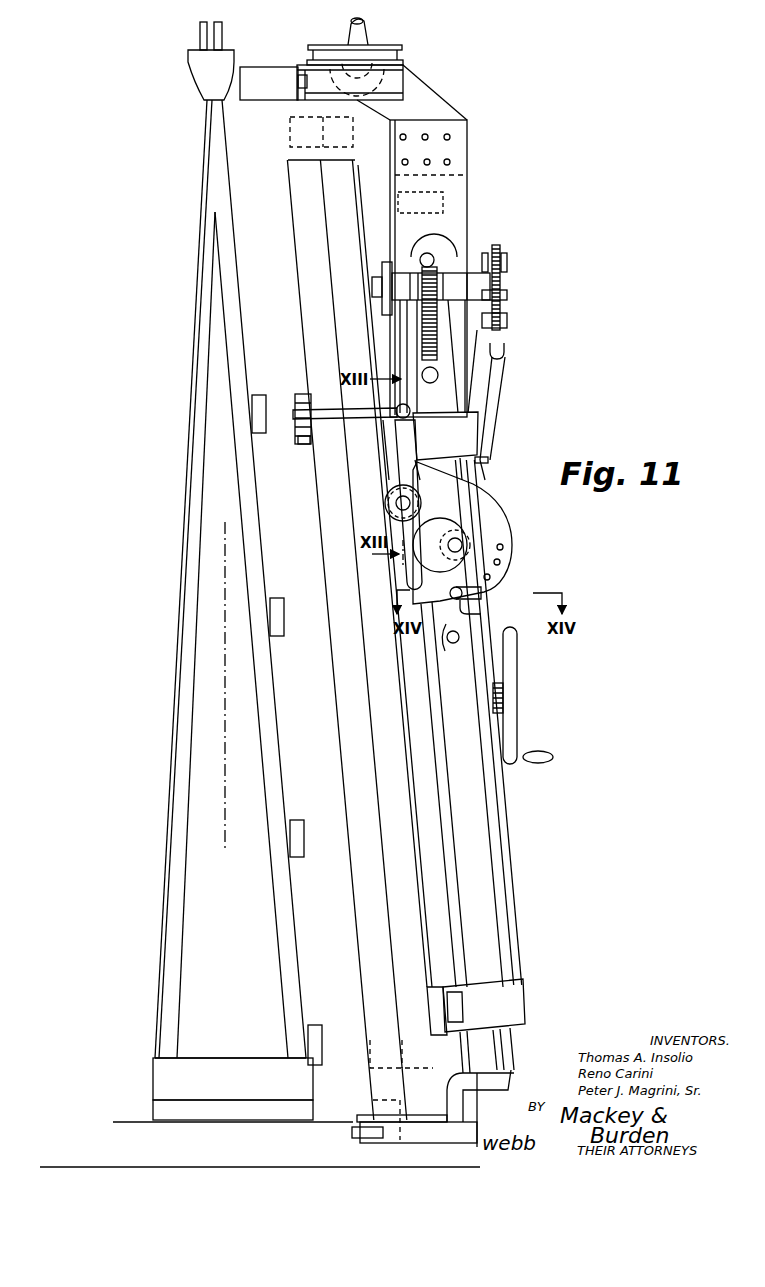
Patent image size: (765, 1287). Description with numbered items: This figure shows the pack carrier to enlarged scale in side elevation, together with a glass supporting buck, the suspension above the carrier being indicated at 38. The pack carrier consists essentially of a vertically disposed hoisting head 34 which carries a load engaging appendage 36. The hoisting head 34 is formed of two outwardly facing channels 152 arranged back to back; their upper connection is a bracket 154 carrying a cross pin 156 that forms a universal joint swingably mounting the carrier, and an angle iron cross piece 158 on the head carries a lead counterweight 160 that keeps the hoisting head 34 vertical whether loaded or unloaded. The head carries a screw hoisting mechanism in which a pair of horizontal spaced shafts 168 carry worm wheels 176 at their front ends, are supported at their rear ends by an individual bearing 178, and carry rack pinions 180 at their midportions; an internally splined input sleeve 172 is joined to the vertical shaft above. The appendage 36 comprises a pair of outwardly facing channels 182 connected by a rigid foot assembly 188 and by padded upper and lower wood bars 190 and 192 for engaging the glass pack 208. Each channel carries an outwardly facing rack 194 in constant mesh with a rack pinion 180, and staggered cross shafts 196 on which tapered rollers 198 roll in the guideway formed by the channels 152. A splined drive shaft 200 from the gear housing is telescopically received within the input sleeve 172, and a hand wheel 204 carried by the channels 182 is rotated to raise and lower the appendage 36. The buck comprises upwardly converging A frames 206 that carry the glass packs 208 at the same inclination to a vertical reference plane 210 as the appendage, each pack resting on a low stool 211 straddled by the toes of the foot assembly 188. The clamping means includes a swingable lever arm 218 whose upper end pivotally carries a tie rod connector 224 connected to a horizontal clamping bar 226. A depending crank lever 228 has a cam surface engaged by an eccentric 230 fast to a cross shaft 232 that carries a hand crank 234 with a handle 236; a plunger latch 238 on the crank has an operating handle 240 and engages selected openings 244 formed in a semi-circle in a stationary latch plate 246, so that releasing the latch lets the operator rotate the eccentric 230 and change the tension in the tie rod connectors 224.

The hoisting head 34 is at (468, 184).
The load engaging appendage 36 is at (548, 854).
The pulley shaft 38 is at (366, 28).
The outwardly facing channels 152 is at (468, 140).
The bracket 154 is at (410, 82).
The cross pin 156 is at (348, 62).
The angle iron cross piece 158 is at (304, 70).
The lead counterweight 160 is at (272, 96).
The horizontal spaced shafts 168 is at (505, 294).
The input sleeve 172 is at (500, 404).
The worm wheels 176 is at (507, 276).
The bearing 178 is at (382, 256).
The rack pinions 180 is at (448, 280).
The outwardly facing channels 182 is at (490, 804).
The foot assembly 188 is at (465, 1113).
The upper wood bar 190 is at (387, 424).
The lower wood bar 192 is at (432, 1008).
The rack 194 is at (422, 335).
The cross shafts 196 is at (421, 258).
The tapered rollers 198 is at (424, 228).
The drive shaft 200 is at (487, 473).
The hand wheel 204 is at (519, 727).
The A frames 206 is at (186, 658).
The glass pack 208 is at (382, 777).
The vertical reference plane 210 is at (228, 716).
The stool 211 is at (360, 1151).
The lever arm 218 is at (399, 468).
The tie rod connector 224 is at (318, 407).
The clamping bar 226 is at (300, 437).
The crank lever 228 is at (405, 530).
The eccentric 230 is at (499, 505).
The cross shaft 232 is at (463, 545).
The hand crank 234 is at (458, 647).
The handle 236 is at (460, 637).
The plunger latch 238 is at (482, 607).
The operating handle 240 is at (503, 588).
The openings 244 is at (509, 562).
The latch plate 246 is at (514, 535).